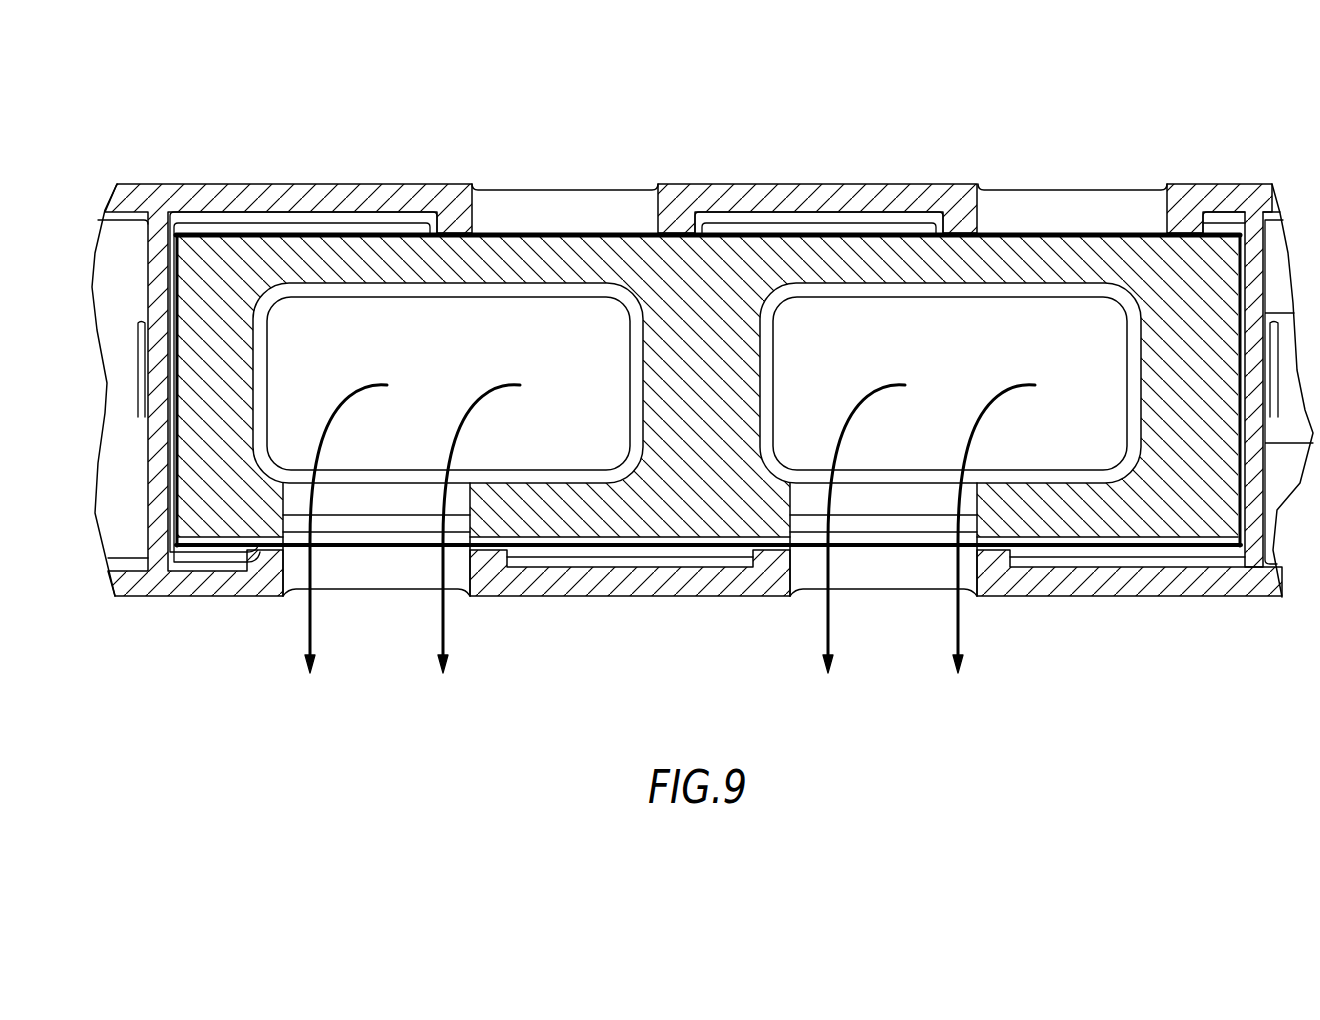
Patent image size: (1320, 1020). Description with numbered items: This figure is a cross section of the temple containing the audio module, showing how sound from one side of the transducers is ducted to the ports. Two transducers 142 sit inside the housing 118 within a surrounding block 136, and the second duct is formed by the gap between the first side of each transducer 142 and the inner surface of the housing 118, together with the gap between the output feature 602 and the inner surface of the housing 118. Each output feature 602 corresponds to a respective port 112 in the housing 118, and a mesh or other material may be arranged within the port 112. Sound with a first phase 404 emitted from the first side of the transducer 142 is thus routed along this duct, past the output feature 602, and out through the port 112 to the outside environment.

The port 112 is at (290, 600).
The housing 118 is at (1113, 582).
The filter block 136 is at (215, 267).
The transducer 142 is at (368, 287).
The first phase 404 is at (309, 643).
The output feature 602 is at (350, 520).